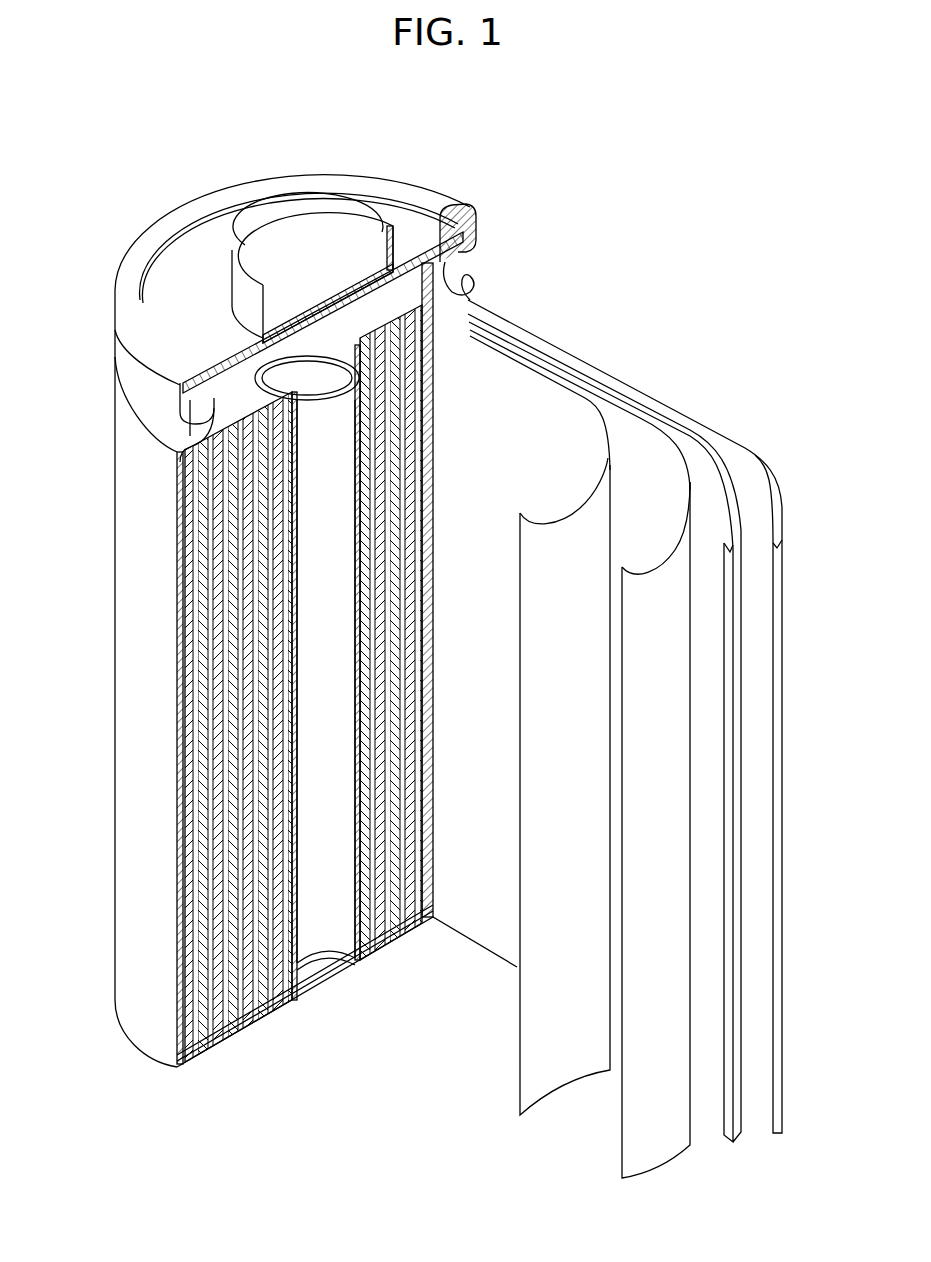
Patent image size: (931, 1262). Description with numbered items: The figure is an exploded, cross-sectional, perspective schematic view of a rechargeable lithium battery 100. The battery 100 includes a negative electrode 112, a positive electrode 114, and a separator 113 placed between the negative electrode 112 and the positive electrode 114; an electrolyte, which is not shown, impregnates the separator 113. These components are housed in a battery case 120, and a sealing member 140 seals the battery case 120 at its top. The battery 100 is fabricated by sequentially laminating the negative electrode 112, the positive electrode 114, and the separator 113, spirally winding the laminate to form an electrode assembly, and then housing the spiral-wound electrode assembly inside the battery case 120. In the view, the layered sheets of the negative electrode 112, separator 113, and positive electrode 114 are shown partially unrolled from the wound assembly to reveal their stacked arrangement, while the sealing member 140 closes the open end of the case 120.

The rechargeable lithium battery 100 is at (505, 170).
The negative electrode 112 is at (750, 493).
The separator 113 is at (535, 405).
The positive electrode 114 is at (610, 420).
The battery case 120 is at (135, 512).
The sealing member 140 is at (266, 230).